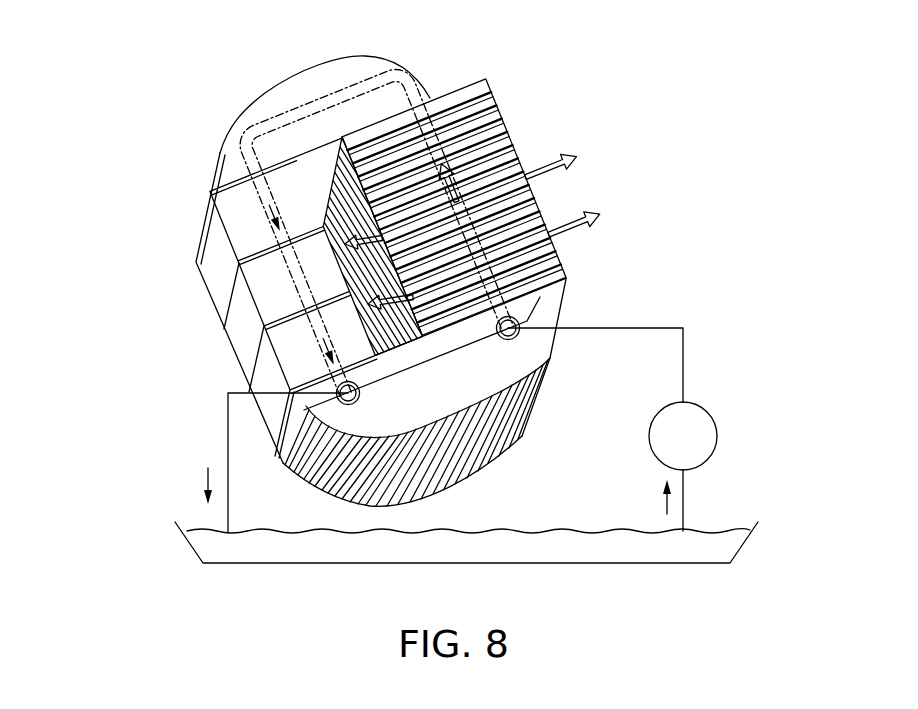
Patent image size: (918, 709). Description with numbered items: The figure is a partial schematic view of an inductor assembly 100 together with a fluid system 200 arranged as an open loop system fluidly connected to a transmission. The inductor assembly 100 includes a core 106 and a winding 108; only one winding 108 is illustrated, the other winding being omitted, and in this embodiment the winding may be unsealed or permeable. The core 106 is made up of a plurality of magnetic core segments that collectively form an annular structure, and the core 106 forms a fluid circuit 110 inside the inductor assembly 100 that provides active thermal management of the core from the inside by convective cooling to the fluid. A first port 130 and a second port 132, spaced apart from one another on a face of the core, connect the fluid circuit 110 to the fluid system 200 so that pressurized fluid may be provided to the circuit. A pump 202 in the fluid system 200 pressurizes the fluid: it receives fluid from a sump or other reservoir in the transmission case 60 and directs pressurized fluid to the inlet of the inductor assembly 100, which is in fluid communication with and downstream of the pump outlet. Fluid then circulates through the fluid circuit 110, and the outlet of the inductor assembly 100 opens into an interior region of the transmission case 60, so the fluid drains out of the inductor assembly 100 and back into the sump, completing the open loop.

The inductor assembly 100 is at (126, 217).
The core 106 is at (422, 96).
The winding 108 is at (500, 140).
The fluid circuit 110 is at (236, 179).
The first port 130 is at (528, 308).
The second port 132 is at (337, 386).
The fluid system 200 is at (685, 363).
The pump 202 is at (718, 436).
The transmission case 60 is at (193, 551).